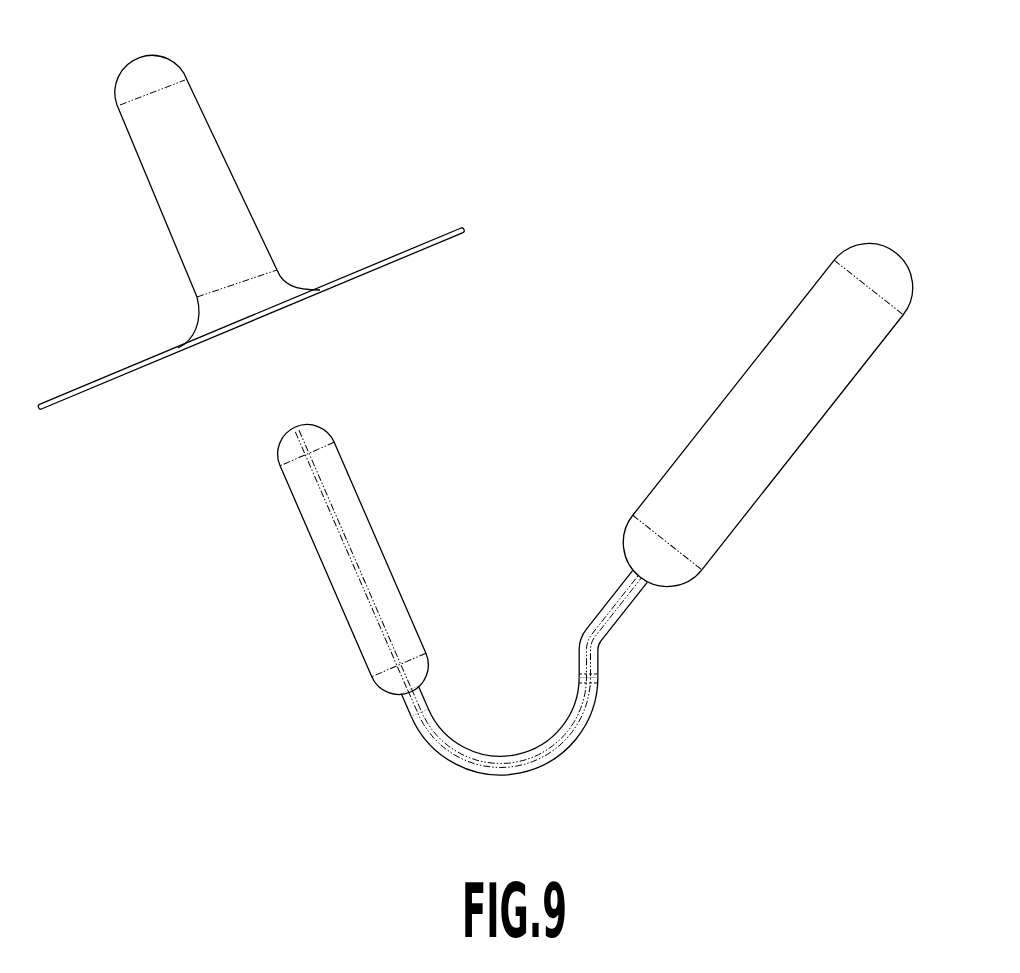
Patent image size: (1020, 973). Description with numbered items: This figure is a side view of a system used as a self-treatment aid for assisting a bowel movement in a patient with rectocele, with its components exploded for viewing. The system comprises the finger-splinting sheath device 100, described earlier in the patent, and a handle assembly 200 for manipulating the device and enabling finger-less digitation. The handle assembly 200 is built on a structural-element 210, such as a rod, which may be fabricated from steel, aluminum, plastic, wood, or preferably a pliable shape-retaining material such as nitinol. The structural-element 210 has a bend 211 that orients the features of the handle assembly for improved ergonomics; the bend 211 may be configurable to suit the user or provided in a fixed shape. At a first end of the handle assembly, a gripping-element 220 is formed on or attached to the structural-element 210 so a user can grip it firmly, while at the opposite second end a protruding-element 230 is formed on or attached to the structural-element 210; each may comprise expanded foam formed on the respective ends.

The finger-splinting sheath device 100 is at (367, 143).
The handle assembly 200 is at (569, 506).
The structural-element 210 is at (627, 602).
The bend 211 is at (537, 765).
The gripping-element 220 is at (793, 335).
The protruding-element 230 is at (318, 545).